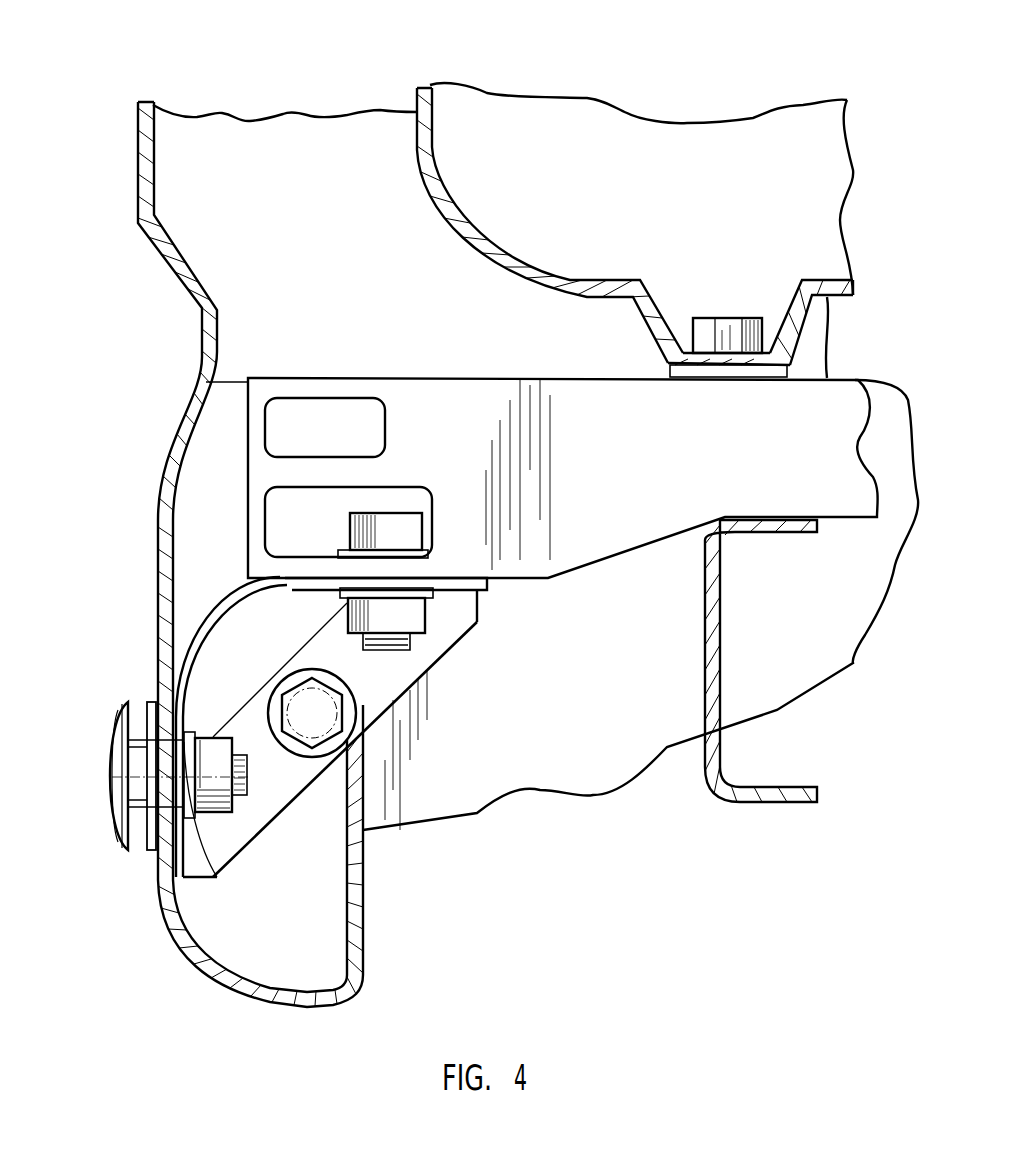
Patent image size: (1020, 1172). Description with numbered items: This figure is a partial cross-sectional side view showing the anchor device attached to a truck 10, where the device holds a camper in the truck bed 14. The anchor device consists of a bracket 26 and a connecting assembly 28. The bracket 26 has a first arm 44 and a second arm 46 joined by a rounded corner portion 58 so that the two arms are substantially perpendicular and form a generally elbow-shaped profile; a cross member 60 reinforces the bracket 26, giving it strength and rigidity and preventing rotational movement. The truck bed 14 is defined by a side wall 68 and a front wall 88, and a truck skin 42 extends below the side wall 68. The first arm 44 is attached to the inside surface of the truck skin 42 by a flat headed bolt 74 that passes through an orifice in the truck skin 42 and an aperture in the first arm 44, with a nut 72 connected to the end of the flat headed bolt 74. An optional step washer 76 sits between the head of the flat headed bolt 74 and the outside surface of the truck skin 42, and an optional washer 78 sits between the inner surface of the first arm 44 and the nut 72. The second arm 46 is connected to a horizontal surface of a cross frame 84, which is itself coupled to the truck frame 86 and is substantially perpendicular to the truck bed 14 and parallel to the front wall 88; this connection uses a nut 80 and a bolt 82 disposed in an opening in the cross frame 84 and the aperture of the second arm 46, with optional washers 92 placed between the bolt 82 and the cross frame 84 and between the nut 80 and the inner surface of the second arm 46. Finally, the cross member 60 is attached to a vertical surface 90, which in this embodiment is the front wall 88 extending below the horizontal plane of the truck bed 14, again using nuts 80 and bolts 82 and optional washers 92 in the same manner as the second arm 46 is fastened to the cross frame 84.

The truck 10 is at (325, 88).
The truck bed 14 is at (668, 256).
The bracket 26 is at (234, 594).
The connecting assembly 28 is at (109, 695).
The truck skin 42 is at (163, 584).
The first arm 44 is at (175, 850).
The second arm 46 is at (330, 585).
The corner portion 58 is at (200, 645).
The cross member 60 is at (378, 680).
The side wall 68 is at (148, 195).
The nut 72 is at (222, 803).
The flat headed bolt 74 is at (108, 780).
The step washer 76 is at (150, 705).
The washer 78 is at (217, 877).
The nut 80 is at (300, 692).
The bolt 82 is at (398, 530).
The cross frame 84 is at (458, 415).
The truck frame 86 is at (717, 642).
The front wall 88 is at (815, 232).
The vertical surface 90 is at (552, 765).
The washers 92 is at (410, 588).